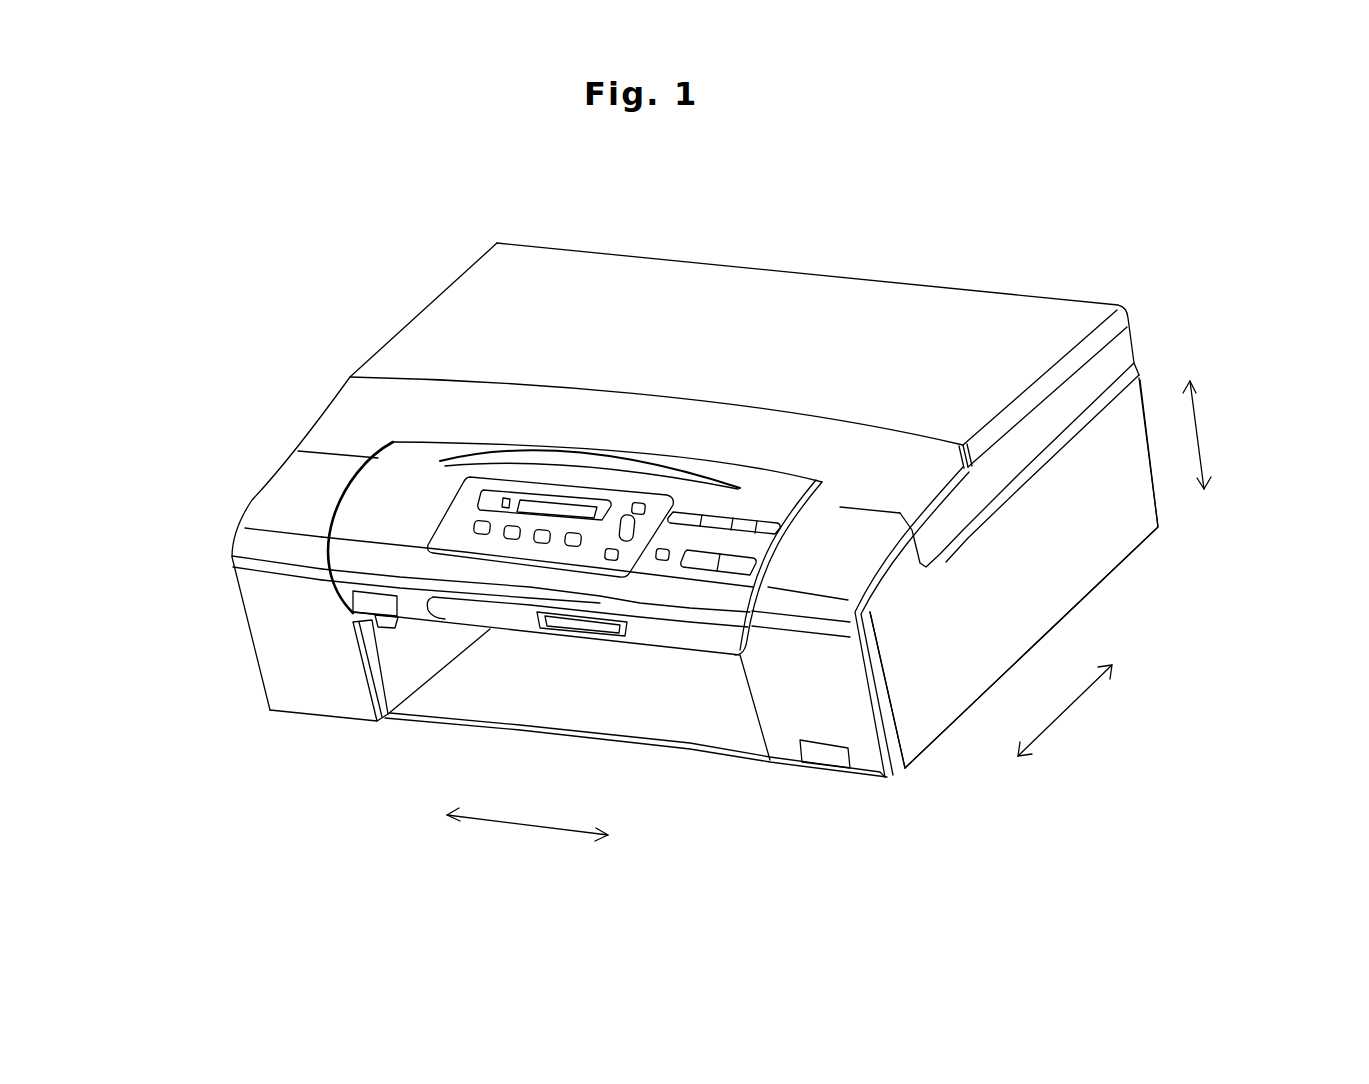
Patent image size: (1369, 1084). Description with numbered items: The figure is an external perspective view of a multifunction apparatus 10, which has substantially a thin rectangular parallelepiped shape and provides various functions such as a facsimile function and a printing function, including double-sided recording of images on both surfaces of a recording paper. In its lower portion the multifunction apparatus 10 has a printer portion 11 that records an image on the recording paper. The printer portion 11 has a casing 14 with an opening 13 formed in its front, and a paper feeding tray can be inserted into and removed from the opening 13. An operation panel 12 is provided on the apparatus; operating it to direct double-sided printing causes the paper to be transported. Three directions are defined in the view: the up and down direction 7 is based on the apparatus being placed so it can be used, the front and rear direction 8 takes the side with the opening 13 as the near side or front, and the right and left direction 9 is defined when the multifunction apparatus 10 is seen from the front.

The multifunction apparatus 10 is at (327, 262).
The printer portion 11 is at (237, 663).
The operation panel 12 is at (410, 487).
The opening 13 is at (397, 663).
The casing 14 is at (1093, 540).
The up and down direction 7 is at (1198, 433).
The front and rear direction 8 is at (1066, 713).
The right and left direction 9 is at (517, 823).